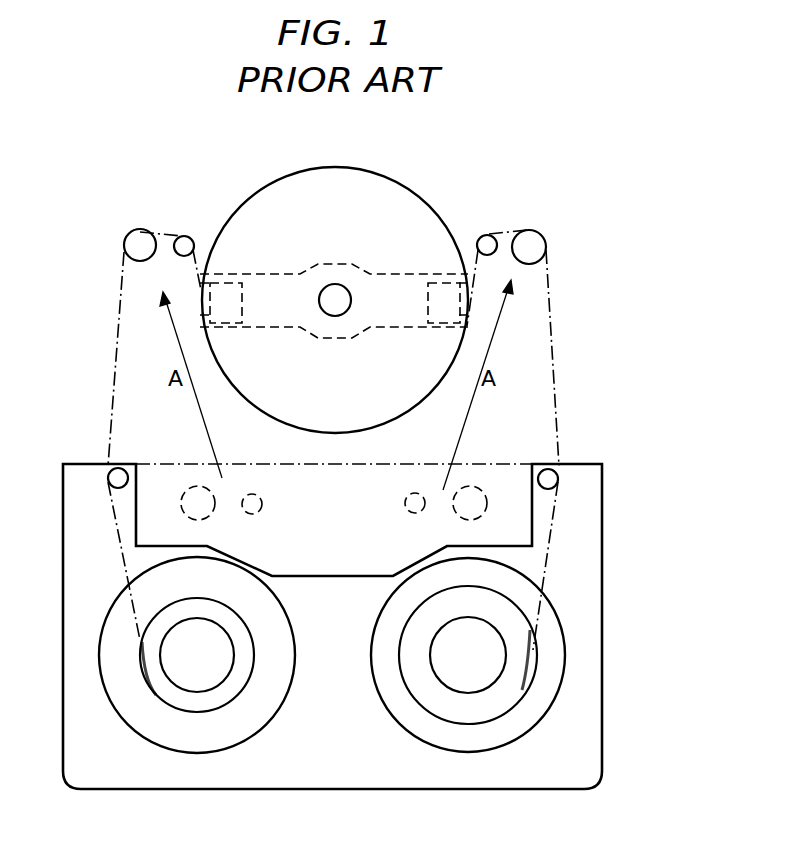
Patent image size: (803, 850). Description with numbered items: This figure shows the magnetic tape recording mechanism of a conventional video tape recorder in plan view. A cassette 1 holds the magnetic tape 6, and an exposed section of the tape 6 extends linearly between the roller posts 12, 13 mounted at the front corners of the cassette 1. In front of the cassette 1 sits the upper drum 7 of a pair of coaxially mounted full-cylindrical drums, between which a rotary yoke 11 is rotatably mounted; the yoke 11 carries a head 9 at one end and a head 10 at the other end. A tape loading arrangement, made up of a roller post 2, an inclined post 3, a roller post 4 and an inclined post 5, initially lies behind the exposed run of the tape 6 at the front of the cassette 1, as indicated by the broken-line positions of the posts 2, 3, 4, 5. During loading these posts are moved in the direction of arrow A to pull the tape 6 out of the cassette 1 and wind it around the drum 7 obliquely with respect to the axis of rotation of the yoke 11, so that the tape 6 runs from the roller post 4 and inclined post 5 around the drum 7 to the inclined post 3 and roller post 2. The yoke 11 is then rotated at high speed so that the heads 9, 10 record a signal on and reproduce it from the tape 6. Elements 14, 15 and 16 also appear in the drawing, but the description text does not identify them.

The cassette 1 is at (583, 552).
The roller post 2 is at (531, 242).
The inclined post 3 is at (486, 240).
The roller post 4 is at (140, 240).
The inclined post 5 is at (186, 240).
The magnetic tape 6 is at (553, 318).
The upper drum 7 is at (395, 197).
The head 9 is at (230, 300).
The head 10 is at (445, 300).
The rotary yoke 11 is at (278, 284).
The roller post 12 is at (555, 480).
The roller post 13 is at (110, 478).
The supply reel 14 is at (112, 675).
The take-up reel 15 is at (553, 665).
The drum shaft 16 is at (335, 293).